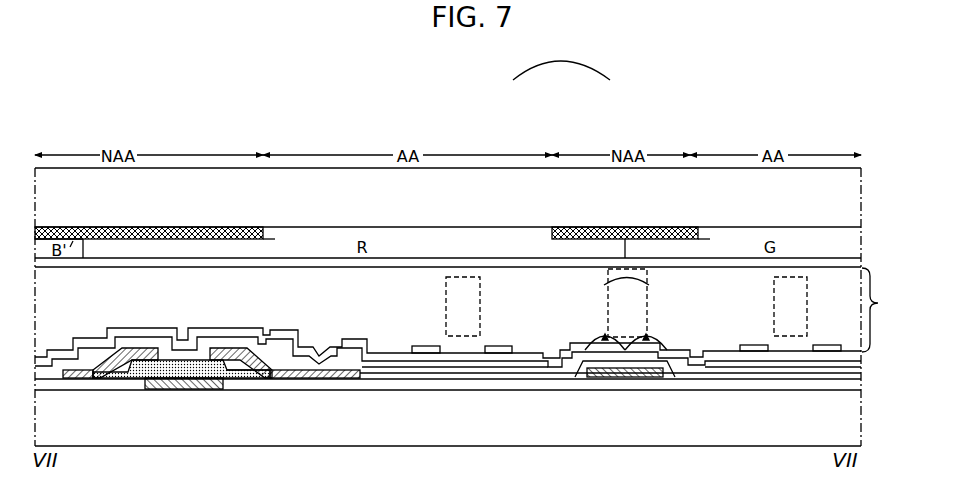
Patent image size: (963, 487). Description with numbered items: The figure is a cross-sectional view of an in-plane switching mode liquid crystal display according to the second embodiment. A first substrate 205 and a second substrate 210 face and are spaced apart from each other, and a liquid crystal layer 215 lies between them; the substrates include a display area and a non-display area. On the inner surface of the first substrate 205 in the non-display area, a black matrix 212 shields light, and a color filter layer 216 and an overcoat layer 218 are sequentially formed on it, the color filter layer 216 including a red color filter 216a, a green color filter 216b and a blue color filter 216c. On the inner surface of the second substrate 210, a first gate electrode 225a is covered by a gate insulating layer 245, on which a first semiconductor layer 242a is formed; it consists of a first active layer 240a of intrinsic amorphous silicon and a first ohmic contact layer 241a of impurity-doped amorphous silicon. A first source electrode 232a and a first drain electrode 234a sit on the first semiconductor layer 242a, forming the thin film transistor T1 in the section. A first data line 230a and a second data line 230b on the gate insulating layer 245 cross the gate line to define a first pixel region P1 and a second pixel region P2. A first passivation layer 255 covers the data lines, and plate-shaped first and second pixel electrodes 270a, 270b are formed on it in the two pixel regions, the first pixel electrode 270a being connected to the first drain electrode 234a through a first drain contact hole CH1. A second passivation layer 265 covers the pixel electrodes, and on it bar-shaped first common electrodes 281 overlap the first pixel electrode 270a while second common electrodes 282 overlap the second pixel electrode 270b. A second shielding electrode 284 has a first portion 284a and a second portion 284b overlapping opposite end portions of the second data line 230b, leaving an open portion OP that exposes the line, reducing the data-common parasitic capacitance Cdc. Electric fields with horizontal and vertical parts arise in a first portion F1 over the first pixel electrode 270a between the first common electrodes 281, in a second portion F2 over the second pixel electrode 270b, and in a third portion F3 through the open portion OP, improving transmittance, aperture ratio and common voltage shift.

The first substrate 205 is at (820, 199).
The second substrate 210 is at (820, 441).
The black matrix 212 is at (198, 227).
The liquid crystal layer 215 is at (474, 317).
The color filter layer 216 is at (561, 58).
The red color filter 216a is at (447, 236).
The green color filter 216b is at (742, 237).
The blue color filter 216c is at (83, 227).
The overcoat layer 218 is at (273, 263).
The first gate electrode 225a is at (173, 388).
The first data line 230a is at (75, 369).
The second data line 230b is at (637, 381).
The first source electrode 232a is at (138, 347).
The first drain electrode 234a is at (230, 347).
The first active layer 240a is at (242, 372).
The first ohmic contact layer 241a is at (268, 372).
The first semiconductor layer 242a is at (262, 380).
The gate insulating layer 245 is at (362, 376).
The first passivation layer 255 is at (390, 372).
The second passivation layer 265 is at (340, 345).
The first pixel electrode 270a is at (527, 362).
The second pixel electrode 270b is at (728, 362).
The first common electrodes 281 is at (422, 345).
The second common electrodes 282 is at (750, 344).
The second shielding electrode 284 is at (626, 271).
The first portion 284a is at (583, 343).
The second portion 284b is at (667, 343).
The first drain contact hole CH1 is at (320, 353).
The open portion OP is at (625, 362).
The data-common parasitic capacitance Cdc is at (582, 366).
The first portion F1 is at (465, 277).
The second portion F2 is at (795, 277).
The third portion F3 is at (655, 281).
The thin film transistor T1 is at (355, 403).
The first pixel region P1 is at (63, 422).
The second pixel region P2 is at (663, 422).